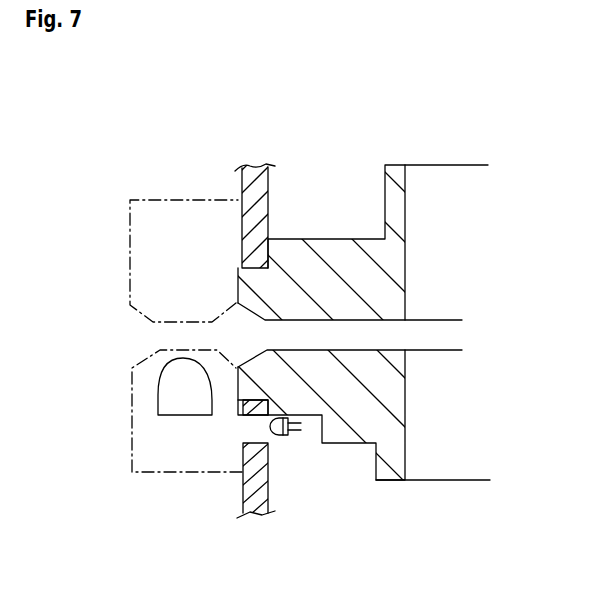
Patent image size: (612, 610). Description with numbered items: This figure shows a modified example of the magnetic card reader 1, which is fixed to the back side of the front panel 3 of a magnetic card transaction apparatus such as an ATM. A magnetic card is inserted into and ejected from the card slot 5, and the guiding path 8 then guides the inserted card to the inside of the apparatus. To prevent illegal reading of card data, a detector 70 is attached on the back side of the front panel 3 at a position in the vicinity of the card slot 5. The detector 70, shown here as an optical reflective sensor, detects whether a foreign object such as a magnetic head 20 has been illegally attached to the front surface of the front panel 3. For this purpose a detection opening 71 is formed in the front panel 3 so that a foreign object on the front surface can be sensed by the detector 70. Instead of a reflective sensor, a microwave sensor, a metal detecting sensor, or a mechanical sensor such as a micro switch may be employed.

The magnetic card reader 1 is at (450, 150).
The front panel 3 is at (252, 174).
The card slot 5 is at (247, 335).
The guiding path 8 is at (318, 330).
The magnetic head 20 is at (168, 388).
The detector 70 is at (277, 439).
The detection opening 71 is at (250, 437).